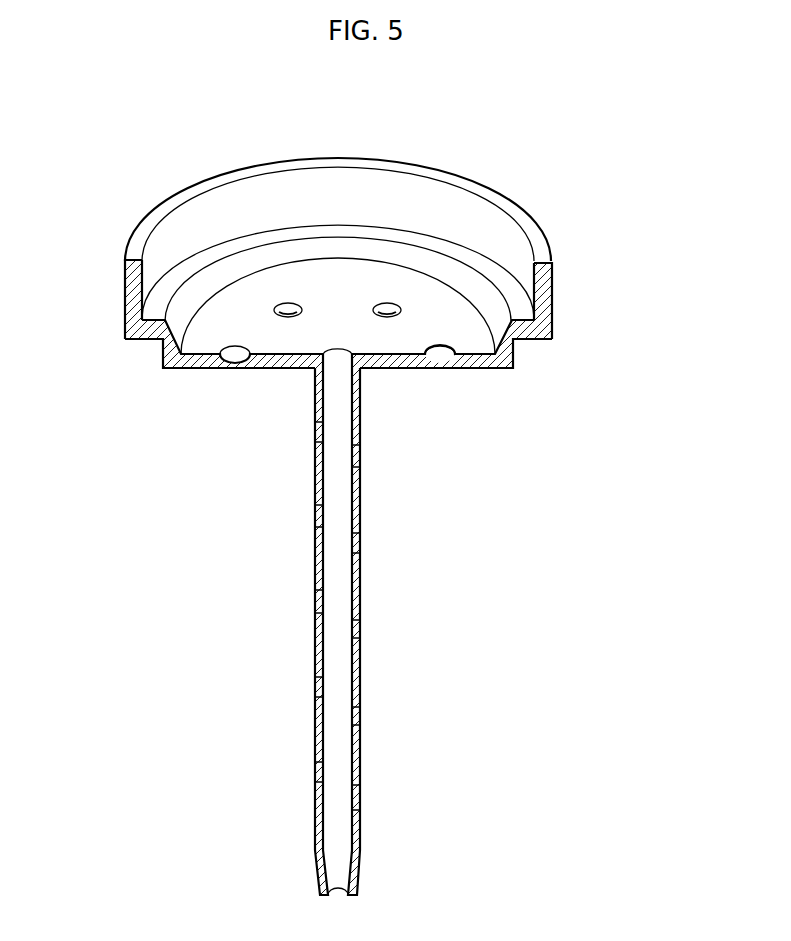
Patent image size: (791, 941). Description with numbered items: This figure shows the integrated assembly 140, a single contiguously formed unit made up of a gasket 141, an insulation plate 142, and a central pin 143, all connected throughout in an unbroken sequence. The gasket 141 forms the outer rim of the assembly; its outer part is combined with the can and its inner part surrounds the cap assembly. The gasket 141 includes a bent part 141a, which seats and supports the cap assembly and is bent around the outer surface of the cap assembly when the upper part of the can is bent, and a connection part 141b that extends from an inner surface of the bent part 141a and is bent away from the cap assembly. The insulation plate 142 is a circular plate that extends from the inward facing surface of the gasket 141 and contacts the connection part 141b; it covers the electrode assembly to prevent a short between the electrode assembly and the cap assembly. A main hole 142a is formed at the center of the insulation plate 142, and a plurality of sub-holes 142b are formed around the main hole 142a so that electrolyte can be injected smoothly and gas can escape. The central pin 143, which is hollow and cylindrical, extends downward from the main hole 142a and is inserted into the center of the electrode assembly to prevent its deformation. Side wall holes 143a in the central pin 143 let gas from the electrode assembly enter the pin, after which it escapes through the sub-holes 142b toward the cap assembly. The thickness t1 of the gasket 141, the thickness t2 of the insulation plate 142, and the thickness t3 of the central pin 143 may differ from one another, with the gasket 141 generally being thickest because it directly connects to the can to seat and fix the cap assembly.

The integrated assembly 140 is at (98, 105).
The gasket 141 is at (619, 300).
The bent part 141a is at (558, 268).
The connection part 141b is at (516, 355).
The insulation plate 142 is at (350, 293).
The main hole 142a is at (333, 350).
The sub-holes 142b is at (395, 307).
The central pin 143 is at (363, 503).
The side wall holes 143a is at (374, 542).
The thickness of the gasket t1 is at (172, 287).
The thickness of the insulation plate t2 is at (275, 330).
The thickness of the central pin t3 is at (345, 465).